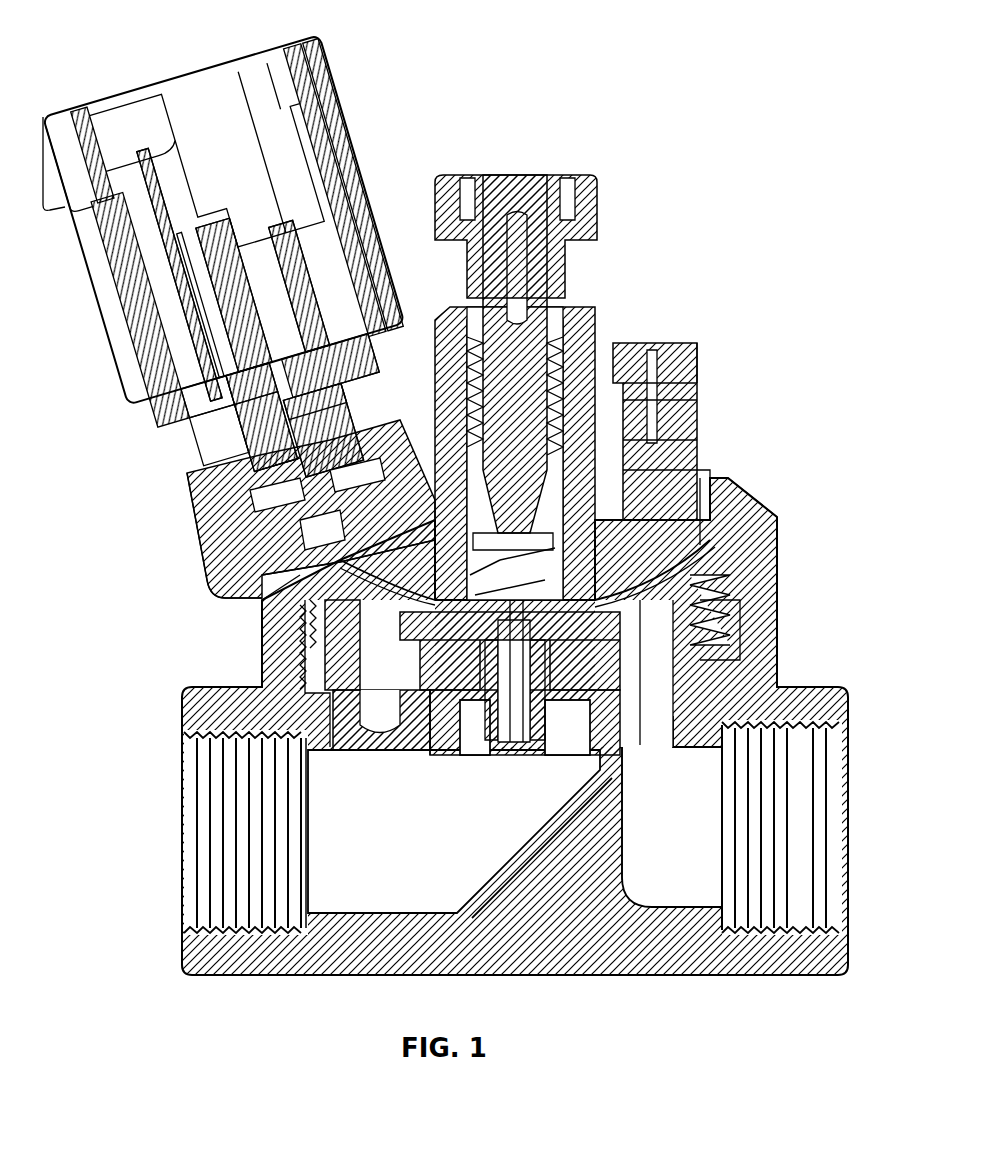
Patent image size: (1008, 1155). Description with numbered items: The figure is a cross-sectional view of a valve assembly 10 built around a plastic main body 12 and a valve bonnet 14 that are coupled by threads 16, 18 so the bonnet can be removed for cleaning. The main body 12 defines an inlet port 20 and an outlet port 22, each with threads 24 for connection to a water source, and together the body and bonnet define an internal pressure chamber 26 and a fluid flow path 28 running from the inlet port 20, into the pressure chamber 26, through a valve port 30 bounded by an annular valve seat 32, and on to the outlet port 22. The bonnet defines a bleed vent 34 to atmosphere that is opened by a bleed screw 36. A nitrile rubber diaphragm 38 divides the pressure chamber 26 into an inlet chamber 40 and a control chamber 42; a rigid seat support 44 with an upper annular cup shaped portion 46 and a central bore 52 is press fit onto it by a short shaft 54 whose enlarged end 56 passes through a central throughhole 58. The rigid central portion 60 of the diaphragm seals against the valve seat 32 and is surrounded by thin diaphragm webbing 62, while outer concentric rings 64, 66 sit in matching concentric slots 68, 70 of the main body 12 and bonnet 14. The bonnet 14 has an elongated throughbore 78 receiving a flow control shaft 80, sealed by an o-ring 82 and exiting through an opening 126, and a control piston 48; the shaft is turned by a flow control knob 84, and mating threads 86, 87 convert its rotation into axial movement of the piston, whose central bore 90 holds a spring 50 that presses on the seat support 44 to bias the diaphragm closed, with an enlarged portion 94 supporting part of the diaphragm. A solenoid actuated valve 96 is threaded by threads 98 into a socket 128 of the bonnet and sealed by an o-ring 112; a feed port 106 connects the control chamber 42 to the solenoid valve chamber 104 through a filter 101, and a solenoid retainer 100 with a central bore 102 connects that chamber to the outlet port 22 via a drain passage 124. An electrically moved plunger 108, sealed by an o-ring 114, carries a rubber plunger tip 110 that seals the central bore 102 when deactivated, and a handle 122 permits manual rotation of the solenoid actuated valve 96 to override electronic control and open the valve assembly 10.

The valve assembly 10 is at (690, 244).
The main body 12 is at (190, 962).
The valve bonnet 14 is at (770, 595).
The threads 16 is at (730, 650).
The threads 18 is at (760, 632).
The inlet port 20 is at (780, 820).
The outlet port 22 is at (260, 880).
The threads 24 is at (230, 840).
The internal pressure chamber 26 is at (300, 740).
The fluid flow path 28 is at (322, 880).
The valve port 30 is at (438, 758).
The annular valve seat 32 is at (393, 758).
The bleed vent 34 is at (732, 484).
The bleed screw 36 is at (684, 343).
The diaphragm 38 is at (624, 722).
The inlet chamber 40 is at (358, 752).
The control chamber 42 is at (262, 590).
The seat support 44 is at (735, 665).
The upper annular cup shaped portion 46 is at (735, 600).
The control piston 48 is at (660, 416).
The spring 50 is at (700, 466).
The central bore 52 is at (522, 748).
The short shaft 54 is at (508, 748).
The enlarged end 56 is at (570, 750).
The central throughhole 58 is at (474, 758).
The central portion 60 is at (290, 760).
The diaphragm webbing 62 is at (305, 606).
The concentric ring 64 is at (690, 580).
The concentric ring 66 is at (700, 590).
The concentric slot 68 is at (296, 645).
The concentric slot 70 is at (345, 650).
The elongated throughbore 78 is at (590, 355).
The flow control shaft 80 is at (560, 320).
The o-ring 82 is at (575, 340).
The flow control knob 84 is at (555, 182).
The mating threads 86 is at (665, 400).
The mating threads 87 is at (688, 372).
The central bore 90 is at (690, 444).
The enlarged portion 94 is at (750, 503).
The solenoid actuated valve 96 is at (352, 40).
The threads 98 is at (240, 548).
The solenoid retainer 100 is at (215, 445).
The filter 101 is at (230, 520).
The central bore 102 is at (200, 420).
The solenoid valve chamber 104 is at (360, 350).
The feed port 106 is at (270, 568).
The plunger 108 is at (240, 325).
The plunger tip 110 is at (180, 370).
The o-ring 112 is at (220, 495).
The o-ring 114 is at (190, 390).
The handle 122 is at (70, 118).
The drain passage 124 is at (300, 770).
The opening 126 is at (545, 320).
The socket 128 is at (200, 472).